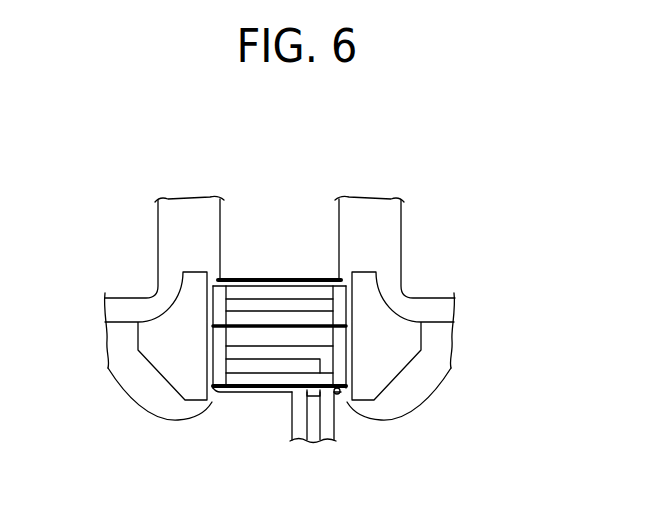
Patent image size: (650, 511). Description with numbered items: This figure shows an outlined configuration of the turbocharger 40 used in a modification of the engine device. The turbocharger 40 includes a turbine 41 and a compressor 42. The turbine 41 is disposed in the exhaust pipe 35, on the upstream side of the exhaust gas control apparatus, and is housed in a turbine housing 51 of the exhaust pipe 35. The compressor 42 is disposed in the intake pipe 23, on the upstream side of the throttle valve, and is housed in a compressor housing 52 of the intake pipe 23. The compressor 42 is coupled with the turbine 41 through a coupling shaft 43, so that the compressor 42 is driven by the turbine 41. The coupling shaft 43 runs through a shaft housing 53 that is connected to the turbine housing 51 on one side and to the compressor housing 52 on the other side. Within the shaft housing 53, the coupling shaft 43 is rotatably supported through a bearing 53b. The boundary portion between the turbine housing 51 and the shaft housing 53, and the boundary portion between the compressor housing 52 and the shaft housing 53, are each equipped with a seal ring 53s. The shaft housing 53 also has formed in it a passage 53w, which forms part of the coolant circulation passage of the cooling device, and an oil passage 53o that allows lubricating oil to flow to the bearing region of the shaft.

The intake pipe 23 is at (401, 223).
The exhaust pipe 35 is at (158, 223).
The turbocharger 40 is at (306, 198).
The turbine 41 is at (150, 362).
The compressor 42 is at (402, 367).
The coupling shaft 43 is at (227, 337).
The turbine housing 51 is at (168, 421).
The compressor housing 52 is at (388, 426).
The shaft housing 53 is at (257, 272).
The bearing 53b is at (292, 370).
The seal ring 53s is at (217, 300).
The oil passage 53o is at (320, 318).
The passage 53w is at (243, 293).